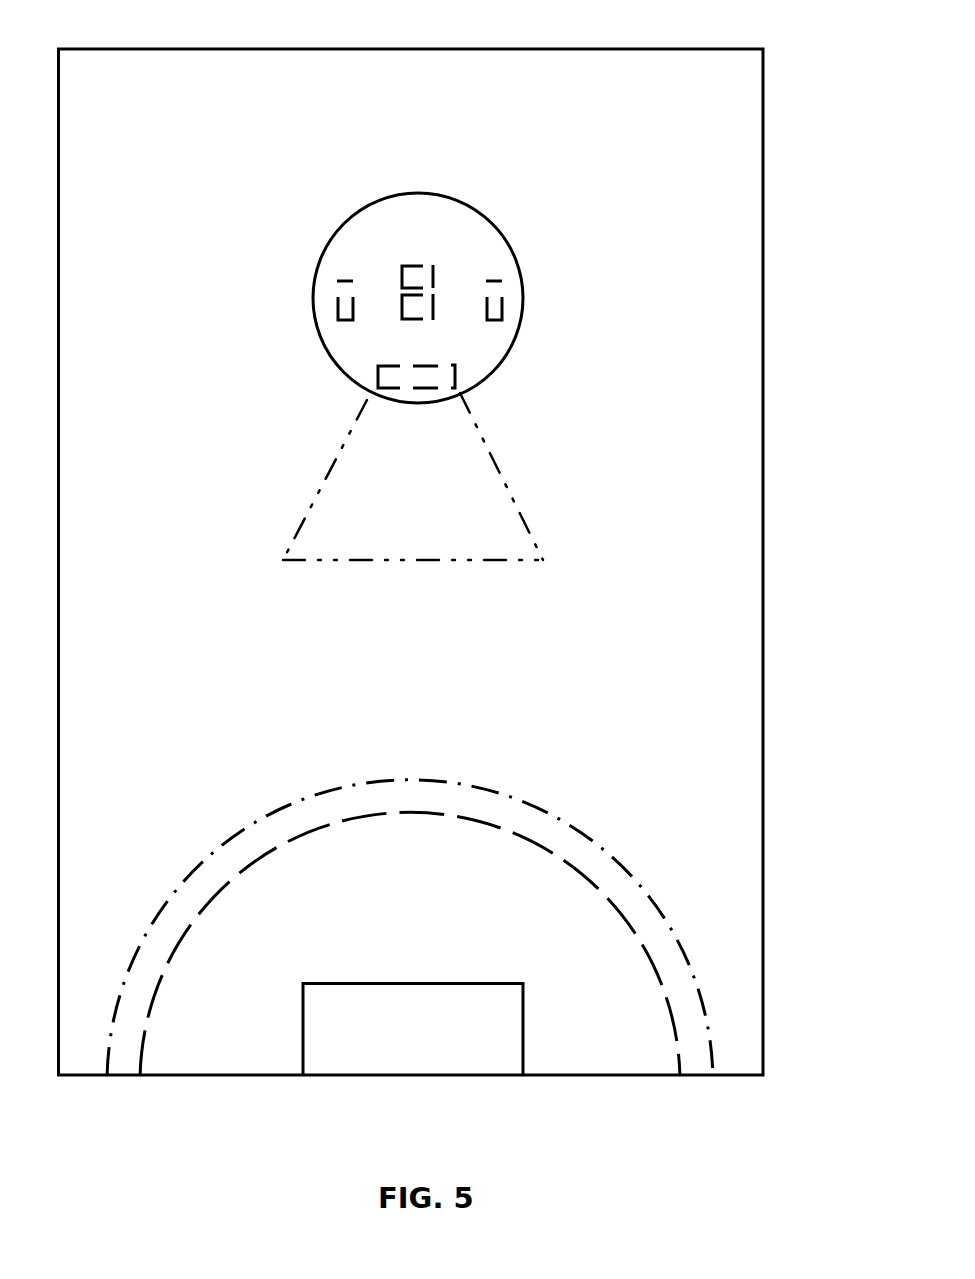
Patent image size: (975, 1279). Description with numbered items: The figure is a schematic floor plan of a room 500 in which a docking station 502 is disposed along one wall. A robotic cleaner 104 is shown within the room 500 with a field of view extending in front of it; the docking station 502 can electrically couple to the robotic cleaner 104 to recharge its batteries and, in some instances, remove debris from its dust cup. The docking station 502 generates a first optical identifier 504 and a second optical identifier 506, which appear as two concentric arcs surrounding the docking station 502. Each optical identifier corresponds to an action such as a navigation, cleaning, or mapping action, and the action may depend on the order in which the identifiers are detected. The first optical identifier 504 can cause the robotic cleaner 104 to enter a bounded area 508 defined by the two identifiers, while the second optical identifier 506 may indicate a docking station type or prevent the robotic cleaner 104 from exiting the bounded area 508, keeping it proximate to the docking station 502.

The room 500 is at (709, 84).
The robotic cleaner 104 is at (538, 174).
The docking station 502 is at (387, 982).
The first optical identifier 504 is at (315, 794).
The second optical identifier 506 is at (460, 818).
The bounded area 508 is at (558, 905).